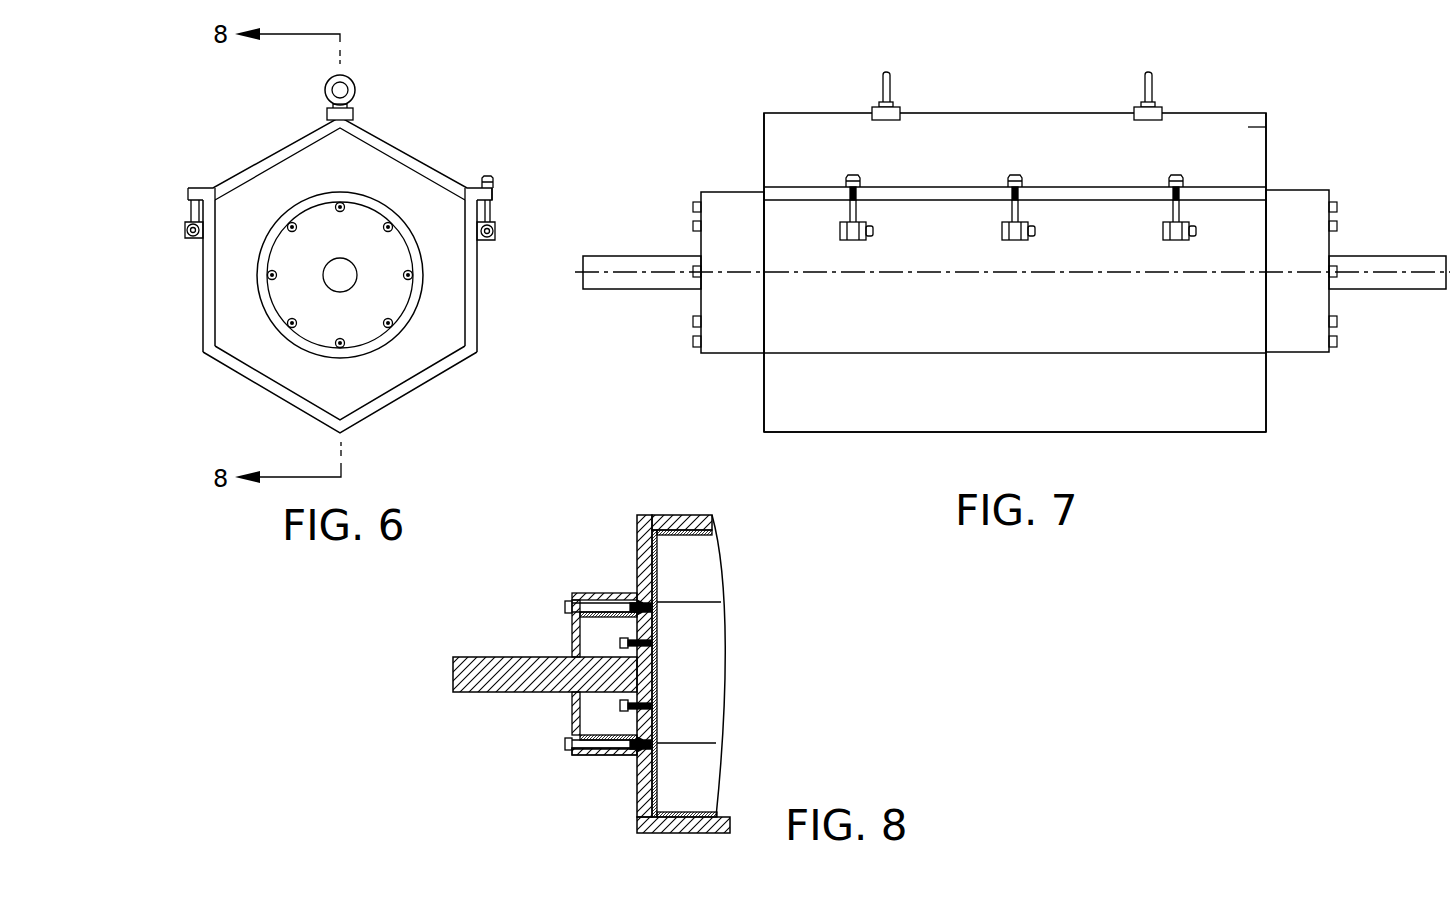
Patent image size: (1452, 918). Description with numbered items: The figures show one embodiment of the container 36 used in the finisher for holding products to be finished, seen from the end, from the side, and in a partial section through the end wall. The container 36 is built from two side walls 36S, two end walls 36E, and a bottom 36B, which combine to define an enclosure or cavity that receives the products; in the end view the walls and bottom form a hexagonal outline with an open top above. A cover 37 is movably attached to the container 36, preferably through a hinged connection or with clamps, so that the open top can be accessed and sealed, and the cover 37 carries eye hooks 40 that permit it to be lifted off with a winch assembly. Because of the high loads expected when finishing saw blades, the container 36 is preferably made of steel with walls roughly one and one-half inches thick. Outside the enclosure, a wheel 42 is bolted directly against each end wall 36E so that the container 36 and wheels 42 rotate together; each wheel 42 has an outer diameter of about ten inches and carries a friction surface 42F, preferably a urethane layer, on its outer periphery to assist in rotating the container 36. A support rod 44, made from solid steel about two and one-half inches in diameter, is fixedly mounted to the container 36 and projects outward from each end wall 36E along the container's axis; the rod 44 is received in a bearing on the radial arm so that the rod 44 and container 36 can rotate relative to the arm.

In FIG. 6, the container 36 is at (346, 271).
In FIG. 7, the container 36 is at (1027, 273).
In FIG. 8, the container 36 is at (647, 691).
In FIG. 6, the bottom 36B is at (282, 402).
In FIG. 7, the bottom 36B is at (1198, 432).
In FIG. 8, the bottom 36B is at (673, 834).
In FIG. 6, the side walls 36S is at (517, 312).
In FIG. 7, the side walls 36S is at (903, 273).
In FIG. 8, the side walls 36S is at (691, 666).
In FIG. 7, the end walls 36E is at (1326, 397).
In FIG. 8, the end walls 36E is at (637, 570).
In FIG. 6, the cover 37 is at (393, 158).
In FIG. 7, the cover 37 is at (987, 118).
In FIG. 8, the cover 37 is at (682, 525).
In FIG. 6, the eye hooks 40 is at (346, 80).
In FIG. 7, the eye hooks 40 is at (1150, 82).
In FIG. 6, the wheels 42 is at (272, 317).
In FIG. 7, the wheels 42 is at (733, 354).
In FIG. 8, the wheels 42 is at (561, 698).
In FIG. 8, the friction surface 42F is at (591, 776).
In FIG. 6, the support rod 44 is at (336, 259).
In FIG. 7, the support rod 44 is at (656, 289).
In FIG. 8, the support rod 44 is at (477, 692).